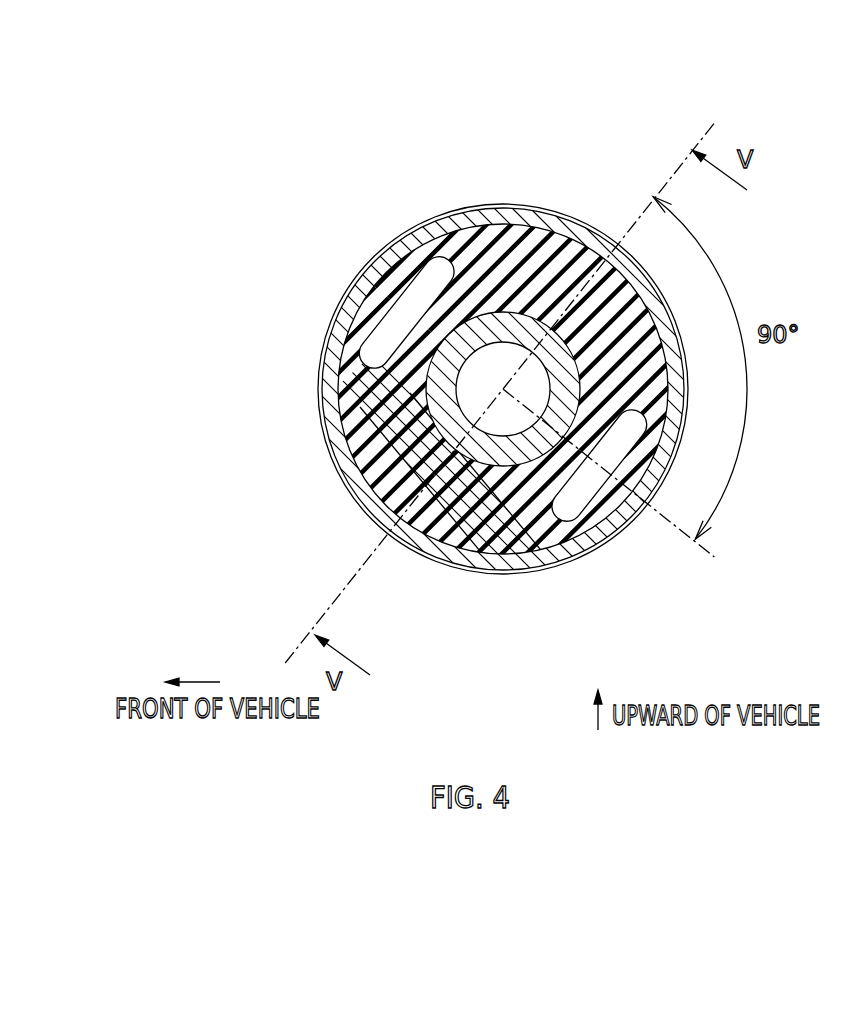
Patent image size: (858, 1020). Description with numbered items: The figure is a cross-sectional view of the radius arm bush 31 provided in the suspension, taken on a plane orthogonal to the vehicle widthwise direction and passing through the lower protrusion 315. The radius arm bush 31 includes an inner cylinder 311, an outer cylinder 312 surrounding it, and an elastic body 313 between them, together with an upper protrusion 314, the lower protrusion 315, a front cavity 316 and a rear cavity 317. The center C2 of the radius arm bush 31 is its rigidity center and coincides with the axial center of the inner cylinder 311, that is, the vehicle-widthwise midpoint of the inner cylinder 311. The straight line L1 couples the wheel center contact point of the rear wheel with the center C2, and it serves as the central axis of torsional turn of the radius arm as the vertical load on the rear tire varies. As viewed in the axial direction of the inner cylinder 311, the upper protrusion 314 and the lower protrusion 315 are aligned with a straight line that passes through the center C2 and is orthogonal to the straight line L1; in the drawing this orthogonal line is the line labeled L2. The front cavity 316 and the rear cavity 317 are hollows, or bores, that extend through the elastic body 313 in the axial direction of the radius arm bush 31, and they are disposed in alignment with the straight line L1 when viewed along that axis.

The radius arm bush 31 is at (340, 253).
The inner cylinder 311 is at (487, 330).
The outer cylinder 312 is at (405, 240).
The elastic body 313 is at (512, 515).
The upper protrusion 314 is at (553, 290).
The lower protrusion 315 is at (397, 452).
The front cavity 316 is at (378, 345).
The rear cavity 317 is at (578, 482).
The straight line L1 is at (672, 549).
The second axis line (section line V-V) L2 is at (345, 553).
The center of the radius arm bush C2 is at (497, 415).